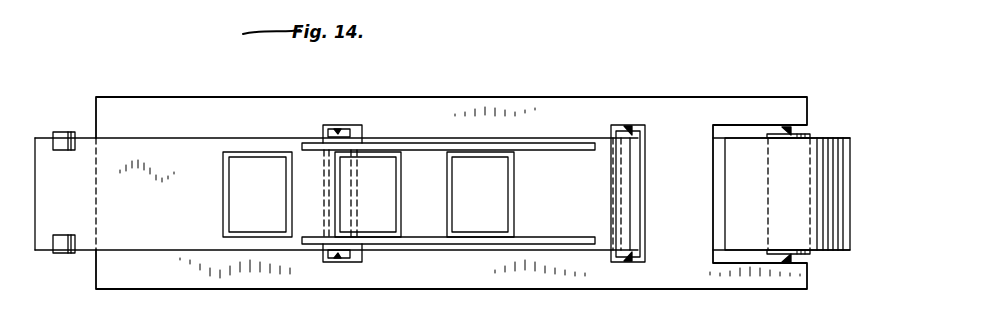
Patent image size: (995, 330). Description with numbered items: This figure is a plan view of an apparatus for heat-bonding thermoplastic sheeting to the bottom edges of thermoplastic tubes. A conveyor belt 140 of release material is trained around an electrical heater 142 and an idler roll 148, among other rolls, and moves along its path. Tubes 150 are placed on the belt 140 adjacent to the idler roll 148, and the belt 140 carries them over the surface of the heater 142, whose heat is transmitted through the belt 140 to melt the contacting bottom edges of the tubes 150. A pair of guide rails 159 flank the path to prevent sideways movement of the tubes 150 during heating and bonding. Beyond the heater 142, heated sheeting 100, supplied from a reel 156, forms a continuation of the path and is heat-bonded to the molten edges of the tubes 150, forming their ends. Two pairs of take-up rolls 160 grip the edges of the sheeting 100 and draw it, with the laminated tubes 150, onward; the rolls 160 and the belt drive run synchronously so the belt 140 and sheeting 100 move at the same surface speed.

The sheeting 100 is at (242, 240).
The conveyor belt 140 is at (553, 248).
The electrical heater 142 is at (435, 228).
The idler roll 148 is at (625, 125).
The tubes 150 is at (223, 204).
The reel 156 is at (817, 142).
The guide rails 159 is at (312, 142).
The take-up rolls 160 is at (75, 120).